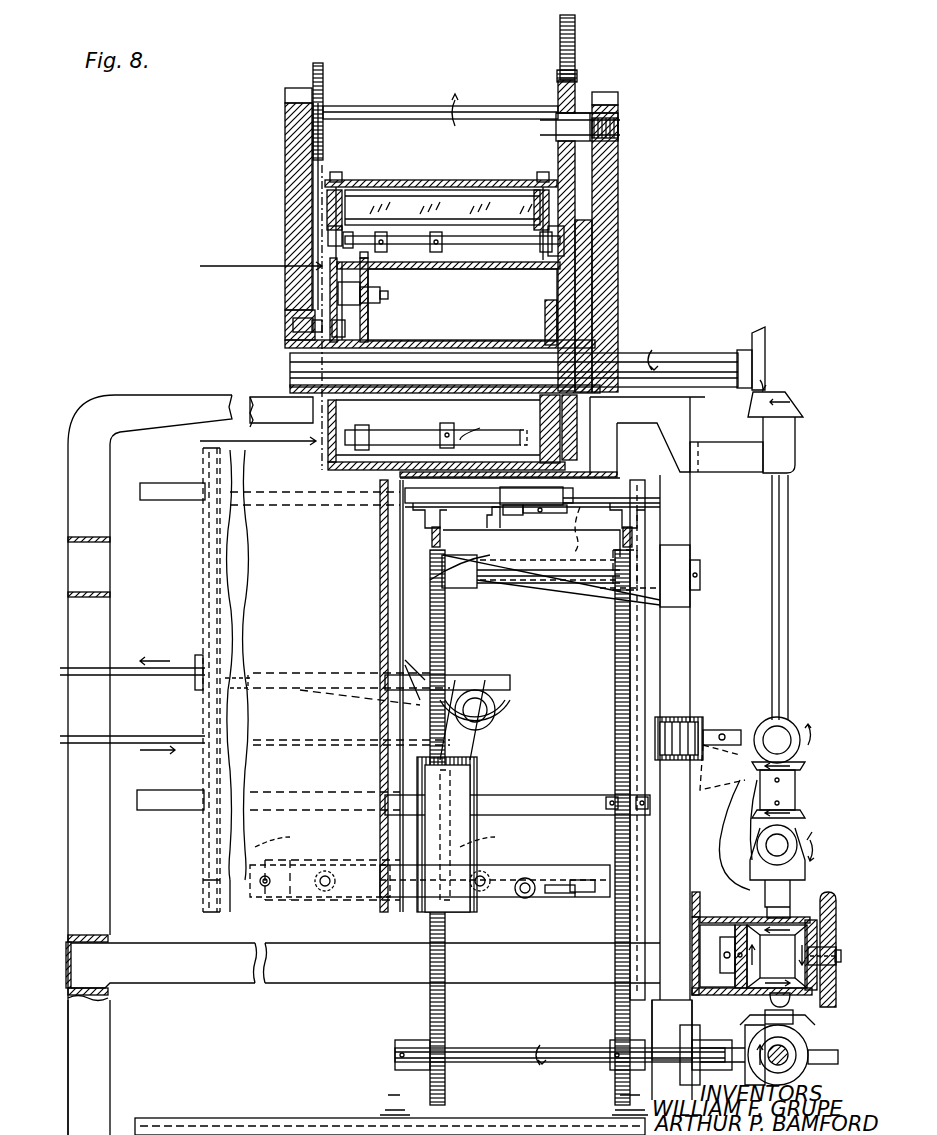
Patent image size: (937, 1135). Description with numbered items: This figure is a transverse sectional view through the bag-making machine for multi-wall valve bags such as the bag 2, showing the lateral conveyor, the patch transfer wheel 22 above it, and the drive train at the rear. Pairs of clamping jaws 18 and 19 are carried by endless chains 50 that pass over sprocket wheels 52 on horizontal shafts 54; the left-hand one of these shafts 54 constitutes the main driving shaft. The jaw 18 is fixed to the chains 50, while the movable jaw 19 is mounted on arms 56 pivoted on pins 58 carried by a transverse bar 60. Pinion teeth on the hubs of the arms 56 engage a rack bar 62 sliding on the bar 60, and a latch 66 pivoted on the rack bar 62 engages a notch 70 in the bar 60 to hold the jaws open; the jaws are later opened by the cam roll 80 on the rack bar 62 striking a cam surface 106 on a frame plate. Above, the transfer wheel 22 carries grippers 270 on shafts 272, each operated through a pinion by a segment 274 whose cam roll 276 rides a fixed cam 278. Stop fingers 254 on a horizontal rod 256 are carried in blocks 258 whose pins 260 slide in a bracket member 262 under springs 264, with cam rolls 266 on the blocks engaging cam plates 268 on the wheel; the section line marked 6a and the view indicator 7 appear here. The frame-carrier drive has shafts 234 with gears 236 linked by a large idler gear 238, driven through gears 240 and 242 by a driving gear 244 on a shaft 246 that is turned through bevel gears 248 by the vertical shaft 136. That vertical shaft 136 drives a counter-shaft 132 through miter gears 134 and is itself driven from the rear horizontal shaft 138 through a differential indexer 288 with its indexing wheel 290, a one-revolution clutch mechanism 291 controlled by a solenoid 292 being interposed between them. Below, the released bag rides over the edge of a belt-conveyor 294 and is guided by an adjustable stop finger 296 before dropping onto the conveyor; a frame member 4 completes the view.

The bag 2 is at (194, 569).
The frame member 4 is at (205, 893).
The section line 6a is at (246, 353).
The section line 7 is at (458, 443).
The clamping jaw 18 is at (140, 495).
The movable jaw 19 is at (393, 843).
The transfer wheel 22 is at (548, 326).
The endless chains 50 is at (405, 535).
The sprocket wheels 52 is at (385, 628).
The horizontal shafts 54 is at (498, 595).
The arms 56 is at (300, 900).
The pins 58 is at (325, 860).
The transverse bar 60 is at (642, 503).
The rack bar 62 is at (579, 494).
The latch 66 is at (510, 560).
The notch 70 is at (587, 535).
The cam roll 80 is at (535, 525).
The cam surface 106 is at (493, 527).
The counter-shaft 132 is at (780, 734).
The miter gears 134 is at (785, 760).
The vertical shaft 136 is at (788, 640).
The shaft 138 is at (770, 1057).
The shafts 234 is at (410, 108).
The gears 236 is at (576, 72).
The idler gear 238 is at (575, 24).
The gear 240 is at (584, 98).
The gear 242 is at (573, 190).
The driving gear 244 is at (558, 306).
The shaft 246 is at (730, 355).
The bevel gears 248 is at (785, 400).
The stop fingers 254 is at (380, 252).
The horizontal rod 256 is at (345, 236).
The blocks 258 is at (337, 231).
The pins 260 is at (347, 180).
The bracket member 262 is at (440, 192).
The springs 264 is at (327, 207).
The cam rolls 266 is at (340, 256).
The cam plates 268 is at (588, 285).
The grippers 270 is at (367, 430).
The shaft 272 is at (412, 432).
The segment 274 is at (332, 288).
The cam roll 276 is at (338, 298).
The fixed cam 278 is at (297, 375).
The differential indexer 288 is at (753, 916).
The indexing wheel 290 is at (762, 891).
The one-revolution clutch mechanism 291 is at (805, 835).
The solenoid 292 is at (703, 717).
The belt-conveyor 294 is at (115, 735).
The stop finger 296 is at (192, 655).